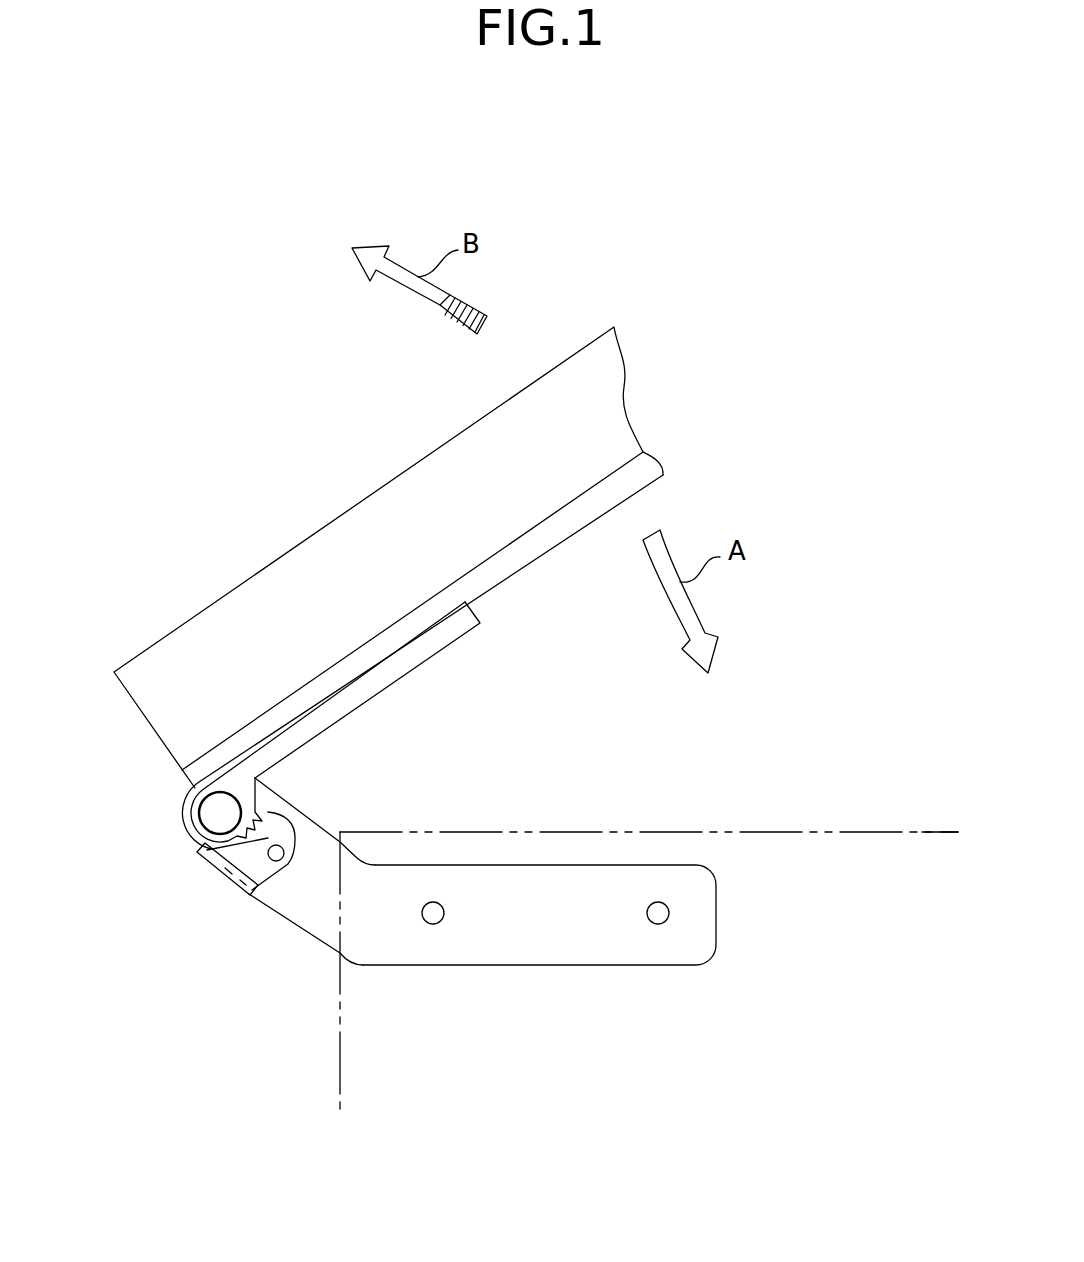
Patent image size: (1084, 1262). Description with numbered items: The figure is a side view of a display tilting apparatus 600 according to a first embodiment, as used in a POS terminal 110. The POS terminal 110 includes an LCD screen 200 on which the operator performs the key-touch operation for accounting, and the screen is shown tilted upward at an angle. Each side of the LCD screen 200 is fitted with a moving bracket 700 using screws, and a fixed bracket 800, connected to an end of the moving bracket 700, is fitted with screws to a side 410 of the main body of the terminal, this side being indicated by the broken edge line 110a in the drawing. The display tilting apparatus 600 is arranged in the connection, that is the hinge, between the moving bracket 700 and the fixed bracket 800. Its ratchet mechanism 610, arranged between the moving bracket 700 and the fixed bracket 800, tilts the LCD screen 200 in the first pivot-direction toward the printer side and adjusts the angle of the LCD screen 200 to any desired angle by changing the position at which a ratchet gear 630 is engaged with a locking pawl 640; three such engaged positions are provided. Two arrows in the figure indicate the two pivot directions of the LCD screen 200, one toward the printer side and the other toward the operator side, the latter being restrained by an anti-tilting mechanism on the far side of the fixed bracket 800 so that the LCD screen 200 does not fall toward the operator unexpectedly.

The LCD screen 200 is at (348, 518).
The moving bracket 700 is at (440, 655).
The ratchet mechanism 610 is at (183, 818).
The ratchet gear 630 is at (190, 836).
The locking pawl 640 is at (280, 818).
The display tilting apparatus 600 is at (325, 829).
The fixed bracket 800 is at (572, 938).
The edge of main body 110a is at (626, 831).
The POS terminal 110 is at (792, 823).
The side of the main body 410 is at (898, 842).